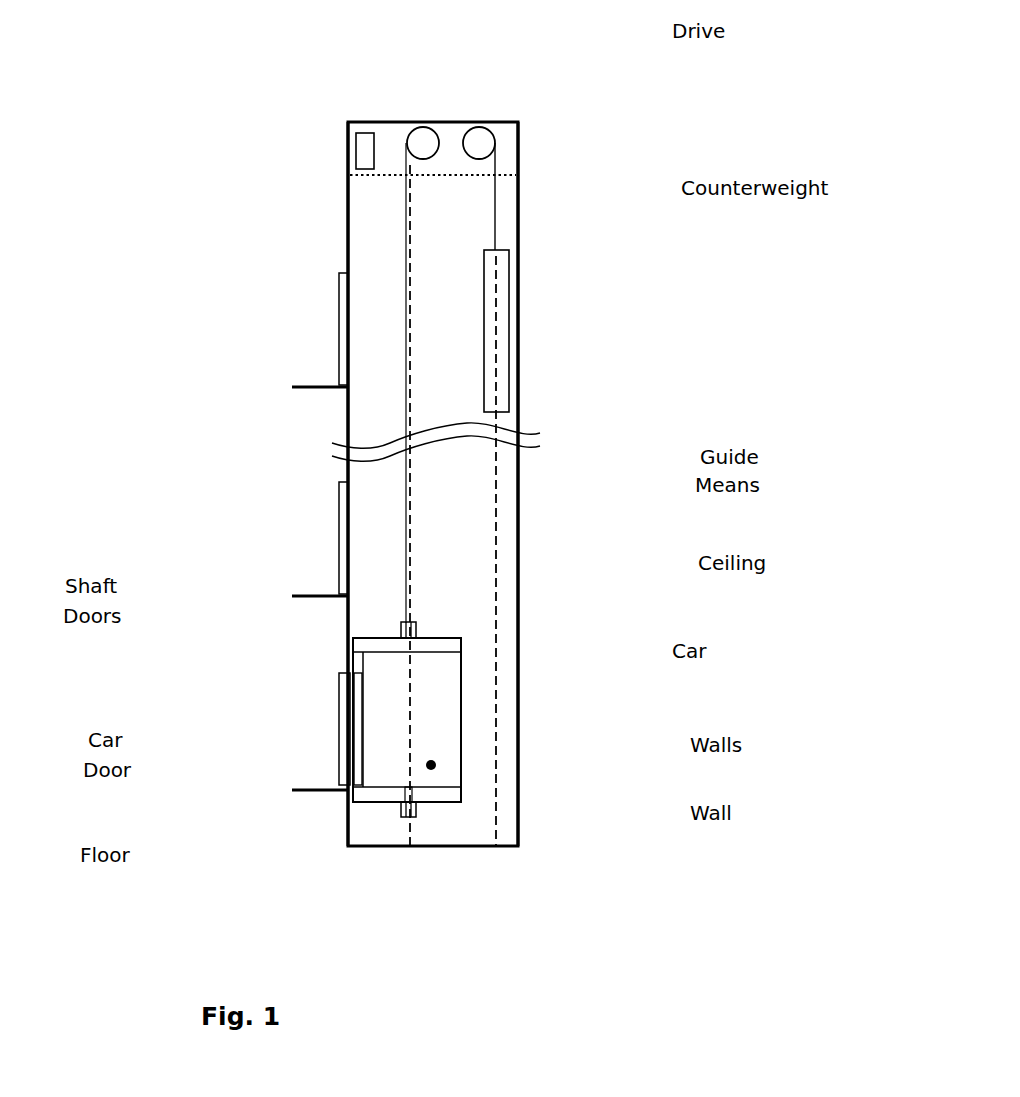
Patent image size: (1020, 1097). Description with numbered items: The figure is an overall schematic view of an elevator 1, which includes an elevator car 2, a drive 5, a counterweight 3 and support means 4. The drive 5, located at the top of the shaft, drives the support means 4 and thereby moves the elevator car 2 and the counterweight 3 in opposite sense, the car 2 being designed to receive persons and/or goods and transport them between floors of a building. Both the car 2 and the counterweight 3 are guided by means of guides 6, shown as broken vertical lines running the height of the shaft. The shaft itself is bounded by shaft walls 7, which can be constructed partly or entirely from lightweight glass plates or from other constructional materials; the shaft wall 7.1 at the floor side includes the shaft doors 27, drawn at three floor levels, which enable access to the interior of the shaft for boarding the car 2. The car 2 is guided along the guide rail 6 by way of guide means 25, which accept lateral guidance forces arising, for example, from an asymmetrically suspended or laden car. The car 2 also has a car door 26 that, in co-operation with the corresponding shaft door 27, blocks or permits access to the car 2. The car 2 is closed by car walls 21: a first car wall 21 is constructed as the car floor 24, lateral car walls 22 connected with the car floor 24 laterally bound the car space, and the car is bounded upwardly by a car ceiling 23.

The elevator 1 is at (316, 101).
The elevator car 2 is at (432, 722).
The counterweight 3 is at (503, 292).
The support means 4 is at (408, 272).
The drive 5 is at (427, 133).
The guide rail 6 is at (408, 319).
The shaft walls 7 is at (519, 201).
The floor-side shaft wall 7.1 is at (347, 216).
The car walls 21 is at (462, 743).
The lateral car walls 22 is at (437, 763).
The car ceiling 23 is at (438, 647).
The car floor 24 is at (390, 792).
The guide means 25 is at (413, 638).
The car door 26 is at (360, 746).
The shaft doors 27 is at (340, 338).